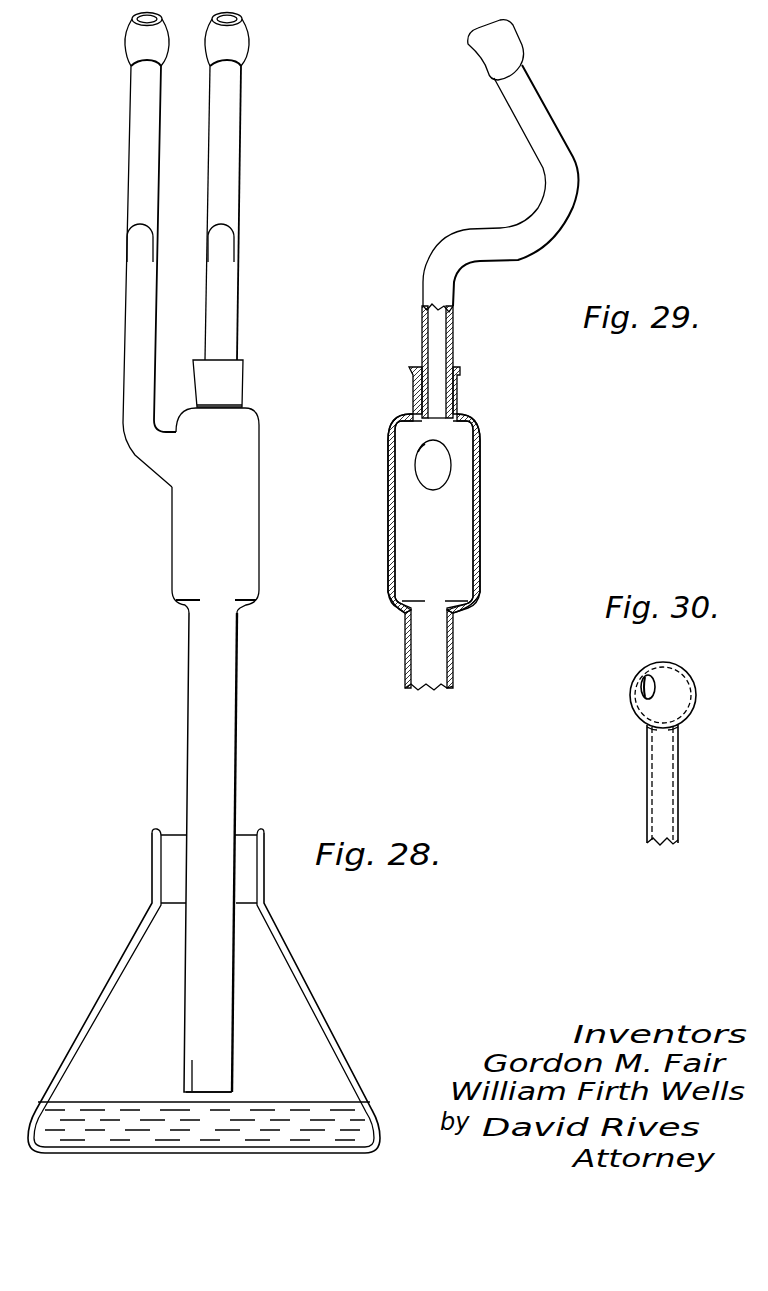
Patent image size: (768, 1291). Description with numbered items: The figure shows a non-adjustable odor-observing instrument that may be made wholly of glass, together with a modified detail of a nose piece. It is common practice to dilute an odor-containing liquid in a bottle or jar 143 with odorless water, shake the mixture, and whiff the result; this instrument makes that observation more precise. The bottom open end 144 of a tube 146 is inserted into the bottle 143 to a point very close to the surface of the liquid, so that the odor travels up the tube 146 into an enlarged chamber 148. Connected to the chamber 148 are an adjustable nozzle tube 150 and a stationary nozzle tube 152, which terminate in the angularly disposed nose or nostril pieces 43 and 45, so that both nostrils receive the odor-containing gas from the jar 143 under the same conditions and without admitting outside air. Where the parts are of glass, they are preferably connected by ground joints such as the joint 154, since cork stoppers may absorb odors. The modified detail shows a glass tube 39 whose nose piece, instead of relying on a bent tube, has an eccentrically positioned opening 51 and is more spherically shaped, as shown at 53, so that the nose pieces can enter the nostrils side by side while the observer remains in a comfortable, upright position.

In FIG. 28, the nose piece 43 is at (135, 50).
In FIG. 28, the nose piece 45 is at (250, 47).
In FIG. 29, the nose piece 45 is at (512, 50).
In FIG. 28, the adjustable nozzle tube 150 is at (236, 251).
In FIG. 29, the adjustable nozzle tube 150 is at (562, 208).
In FIG. 28, the stationary nozzle tube 152 is at (128, 396).
In FIG. 29, the stationary nozzle tube 152 is at (433, 455).
In FIG. 28, the ground joint 154 is at (240, 362).
In FIG. 29, the ground joint 154 is at (448, 390).
In FIG. 28, the enlarged chamber 148 is at (232, 526).
In FIG. 29, the enlarged chamber 148 is at (479, 522).
In FIG. 28, the tube 146 is at (234, 750).
In FIG. 29, the tube 146 is at (455, 652).
In FIG. 28, the bottle or jar 143 is at (310, 987).
In FIG. 28, the bottom open end 144 is at (195, 1078).
In FIG. 30, the eccentrically positioned opening 51 is at (640, 684).
In FIG. 30, the spherically shaped nose piece 53 is at (688, 693).
In FIG. 30, the glass tube 39 is at (680, 818).